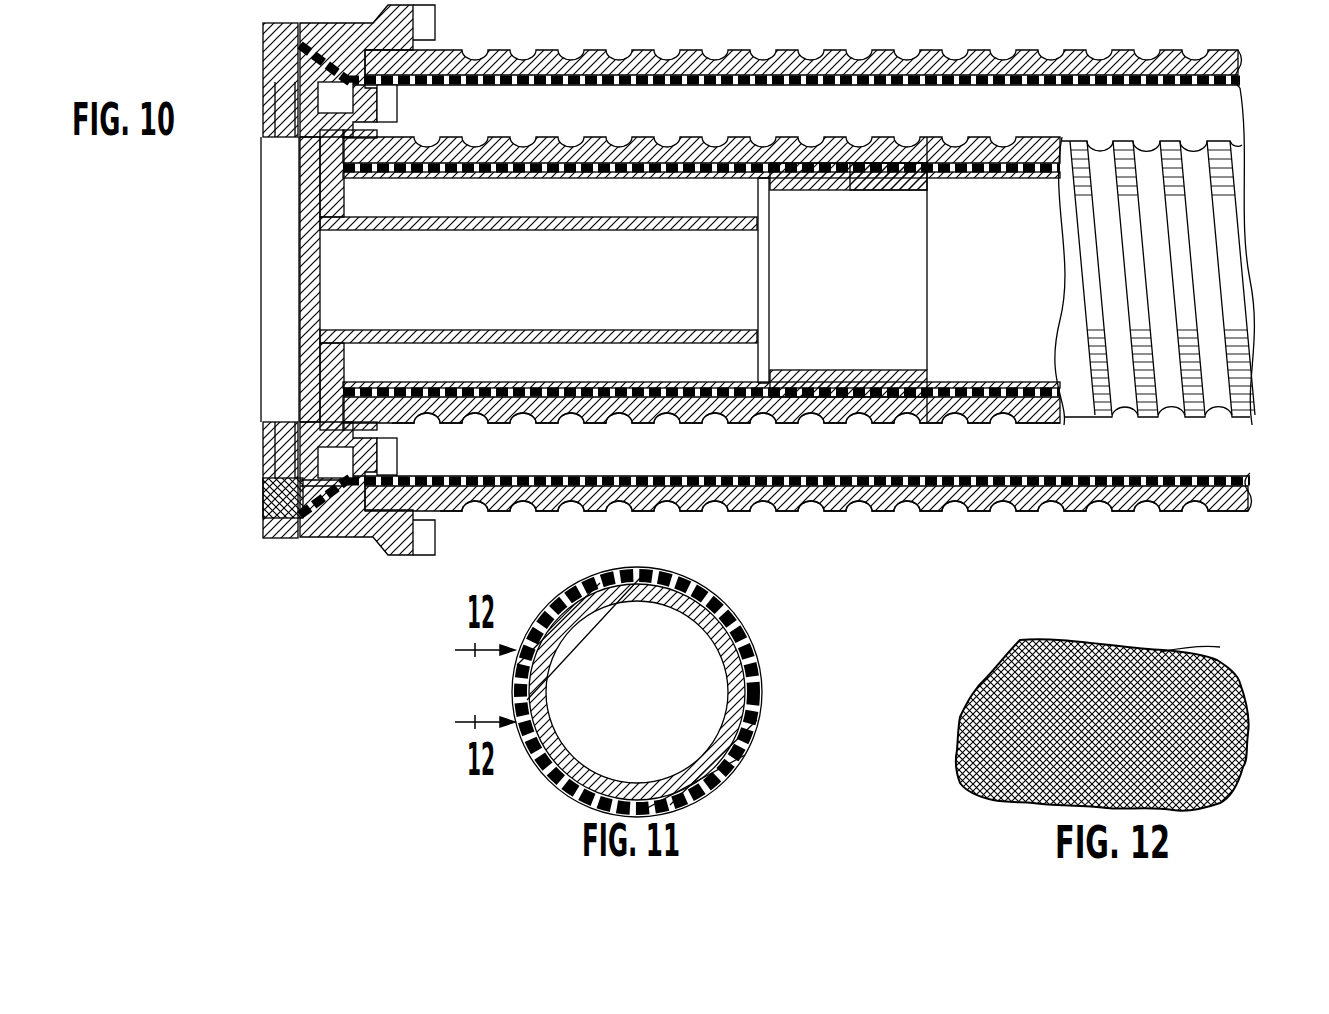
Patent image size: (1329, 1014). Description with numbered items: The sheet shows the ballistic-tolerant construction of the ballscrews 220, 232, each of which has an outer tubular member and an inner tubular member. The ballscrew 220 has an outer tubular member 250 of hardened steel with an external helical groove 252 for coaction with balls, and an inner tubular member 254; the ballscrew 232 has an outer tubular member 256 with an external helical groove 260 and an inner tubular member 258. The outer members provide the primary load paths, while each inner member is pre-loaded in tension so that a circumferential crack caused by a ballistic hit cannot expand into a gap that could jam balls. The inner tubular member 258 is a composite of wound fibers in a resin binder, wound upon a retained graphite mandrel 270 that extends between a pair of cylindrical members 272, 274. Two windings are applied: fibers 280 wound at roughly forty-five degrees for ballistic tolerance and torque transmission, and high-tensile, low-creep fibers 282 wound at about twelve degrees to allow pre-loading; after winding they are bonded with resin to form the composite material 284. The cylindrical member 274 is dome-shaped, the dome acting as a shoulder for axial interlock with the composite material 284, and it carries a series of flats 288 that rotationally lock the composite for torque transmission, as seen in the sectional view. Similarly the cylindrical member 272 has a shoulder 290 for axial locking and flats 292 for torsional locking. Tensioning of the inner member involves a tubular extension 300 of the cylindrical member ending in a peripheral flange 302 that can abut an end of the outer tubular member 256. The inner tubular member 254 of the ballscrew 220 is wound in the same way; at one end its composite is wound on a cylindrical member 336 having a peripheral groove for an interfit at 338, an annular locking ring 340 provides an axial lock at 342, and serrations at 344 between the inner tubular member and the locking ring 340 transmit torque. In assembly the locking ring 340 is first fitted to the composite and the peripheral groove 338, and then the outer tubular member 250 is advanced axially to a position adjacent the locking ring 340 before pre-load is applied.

In FIG. 10, the ballscrew 220 is at (799, 306).
In FIG. 10, the ballscrew 232 is at (701, 297).
In FIG. 10, the outer tubular member 250 is at (873, 503).
In FIG. 10, the external helical groove 252 is at (953, 507).
In FIG. 10, the inner tubular member 254 is at (910, 477).
In FIG. 10, the outer tubular member 256 is at (580, 413).
In FIG. 10, the inner tubular member 258 is at (970, 393).
In FIG. 10, the external helical groove 260 is at (706, 432).
In FIG. 10, the retained mandrel 270 is at (953, 390).
In FIG. 10, the cylindrical member 272 is at (893, 183).
In FIG. 11, the cylindrical member 274 is at (733, 675).
In FIG. 12, the fibers 280 is at (1027, 642).
In FIG. 12, the fibers 282 is at (1160, 652).
In FIG. 10, the composite material 284 is at (1028, 388).
In FIG. 11, the composite material 284 is at (750, 740).
In FIG. 11, the flats 288 is at (673, 573).
In FIG. 10, the shoulder 290 is at (810, 177).
In FIG. 10, the flats 292 is at (857, 390).
In FIG. 10, the tubular extension 300 is at (663, 177).
In FIG. 10, the peripheral flange 302 is at (318, 152).
In FIG. 10, the cylindrical member 336 is at (305, 398).
In FIG. 10, the peripheral groove 338 is at (303, 482).
In FIG. 10, the annular locking ring 340 is at (312, 542).
In FIG. 10, the axial lock 342 is at (317, 520).
In FIG. 10, the serrations 344 is at (257, 512).